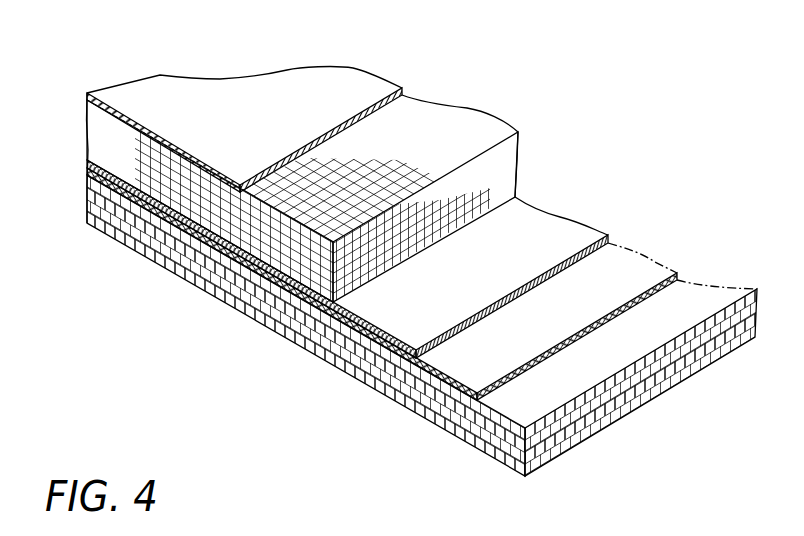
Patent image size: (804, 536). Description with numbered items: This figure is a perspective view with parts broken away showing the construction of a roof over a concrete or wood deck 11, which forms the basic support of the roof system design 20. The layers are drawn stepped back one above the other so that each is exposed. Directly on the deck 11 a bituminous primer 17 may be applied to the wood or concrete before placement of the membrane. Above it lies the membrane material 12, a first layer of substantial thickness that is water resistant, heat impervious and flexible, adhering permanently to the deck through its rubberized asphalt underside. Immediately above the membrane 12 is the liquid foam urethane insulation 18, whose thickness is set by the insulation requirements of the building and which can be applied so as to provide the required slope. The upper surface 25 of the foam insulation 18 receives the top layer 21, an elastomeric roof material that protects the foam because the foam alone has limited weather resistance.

The roof system design 20 is at (138, 70).
The top layer 21 is at (332, 95).
The upper surface of foam insulation 25 is at (326, 186).
The foam urethane insulation 18 is at (488, 182).
The membrane material 12 is at (542, 237).
The bituminous primer 17 is at (612, 280).
The concrete or wood deck 11 is at (683, 317).